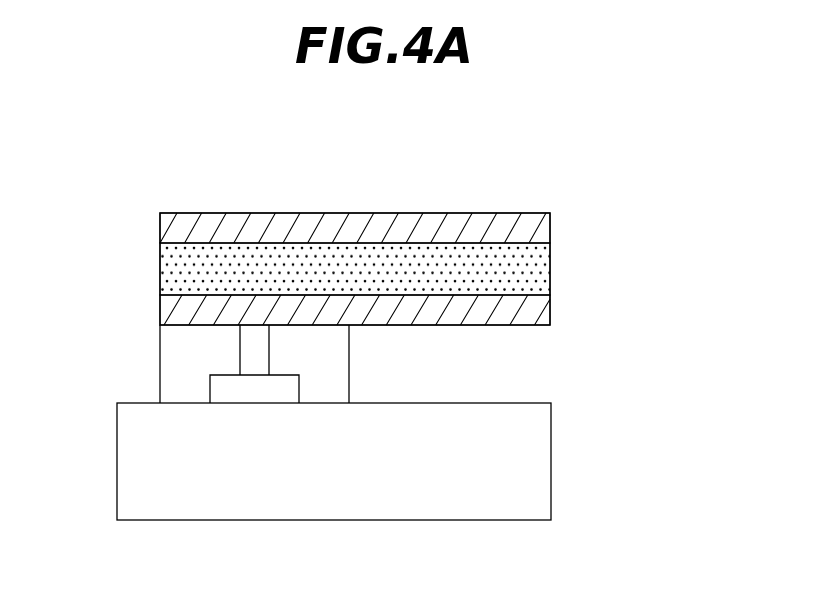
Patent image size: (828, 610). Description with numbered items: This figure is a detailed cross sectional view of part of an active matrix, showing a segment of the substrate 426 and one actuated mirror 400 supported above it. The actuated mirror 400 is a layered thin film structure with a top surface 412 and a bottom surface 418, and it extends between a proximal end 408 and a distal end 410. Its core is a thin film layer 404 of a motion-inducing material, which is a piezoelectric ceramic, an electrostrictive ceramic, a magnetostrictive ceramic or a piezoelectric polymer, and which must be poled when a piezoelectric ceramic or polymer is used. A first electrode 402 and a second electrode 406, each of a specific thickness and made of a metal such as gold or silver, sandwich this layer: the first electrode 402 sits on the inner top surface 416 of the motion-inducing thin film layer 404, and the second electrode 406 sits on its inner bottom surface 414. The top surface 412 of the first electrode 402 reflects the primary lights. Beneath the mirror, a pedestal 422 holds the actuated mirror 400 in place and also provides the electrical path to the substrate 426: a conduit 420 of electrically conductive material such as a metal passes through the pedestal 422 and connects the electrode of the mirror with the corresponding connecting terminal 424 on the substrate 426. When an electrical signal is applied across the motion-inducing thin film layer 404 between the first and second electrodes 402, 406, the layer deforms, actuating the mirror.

The actuated mirror 400 is at (672, 210).
The first electrode 402 is at (551, 223).
The motion-inducing thin film layer 404 is at (551, 268).
The second electrode 406 is at (551, 308).
The proximal end 408 is at (173, 257).
The distal end 410 is at (508, 257).
The top surface 412 is at (387, 212).
The inner bottom surface 414 is at (493, 296).
The inner top surface 416 is at (302, 237).
The bottom surface 418 is at (408, 325).
The conduit 420 is at (243, 340).
The pedestal 422 is at (163, 365).
The connecting terminal 424 is at (218, 393).
The substrate 426 is at (551, 471).